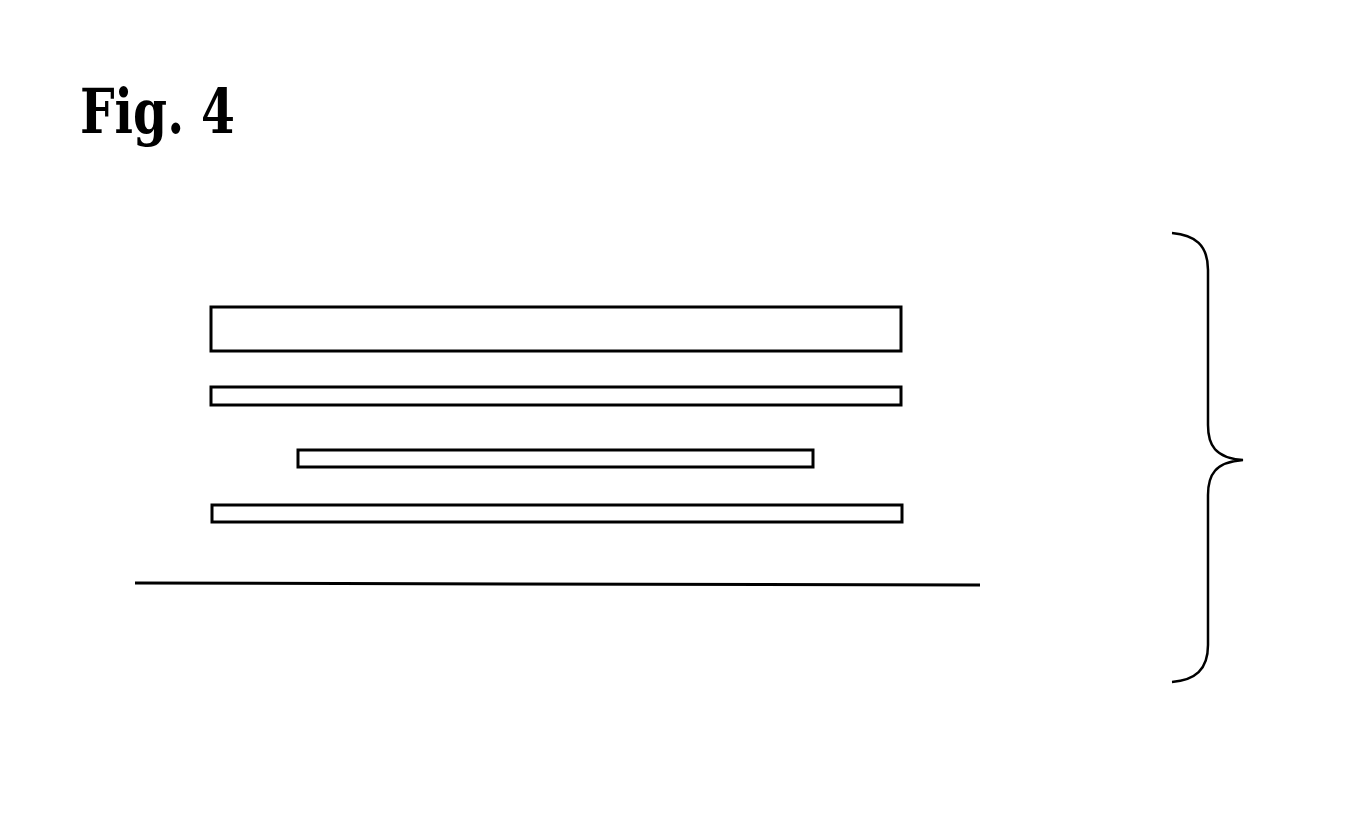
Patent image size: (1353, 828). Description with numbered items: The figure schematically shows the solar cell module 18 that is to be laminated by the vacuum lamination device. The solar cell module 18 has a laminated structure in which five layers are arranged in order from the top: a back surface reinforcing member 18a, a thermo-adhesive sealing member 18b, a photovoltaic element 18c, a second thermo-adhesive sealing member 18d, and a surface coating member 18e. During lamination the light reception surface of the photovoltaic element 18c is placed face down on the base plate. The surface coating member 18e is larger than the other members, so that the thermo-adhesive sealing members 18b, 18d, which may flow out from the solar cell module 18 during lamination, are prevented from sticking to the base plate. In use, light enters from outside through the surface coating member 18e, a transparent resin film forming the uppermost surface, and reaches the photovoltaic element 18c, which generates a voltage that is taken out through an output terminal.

The solar cell module 18 is at (1246, 457).
The back surface reinforcing member 18a is at (893, 310).
The thermo-adhesive sealing member 18b is at (901, 398).
The photovoltaic element 18c is at (813, 460).
The thermo-adhesive sealing member 18d is at (902, 515).
The surface coating member 18e is at (965, 585).